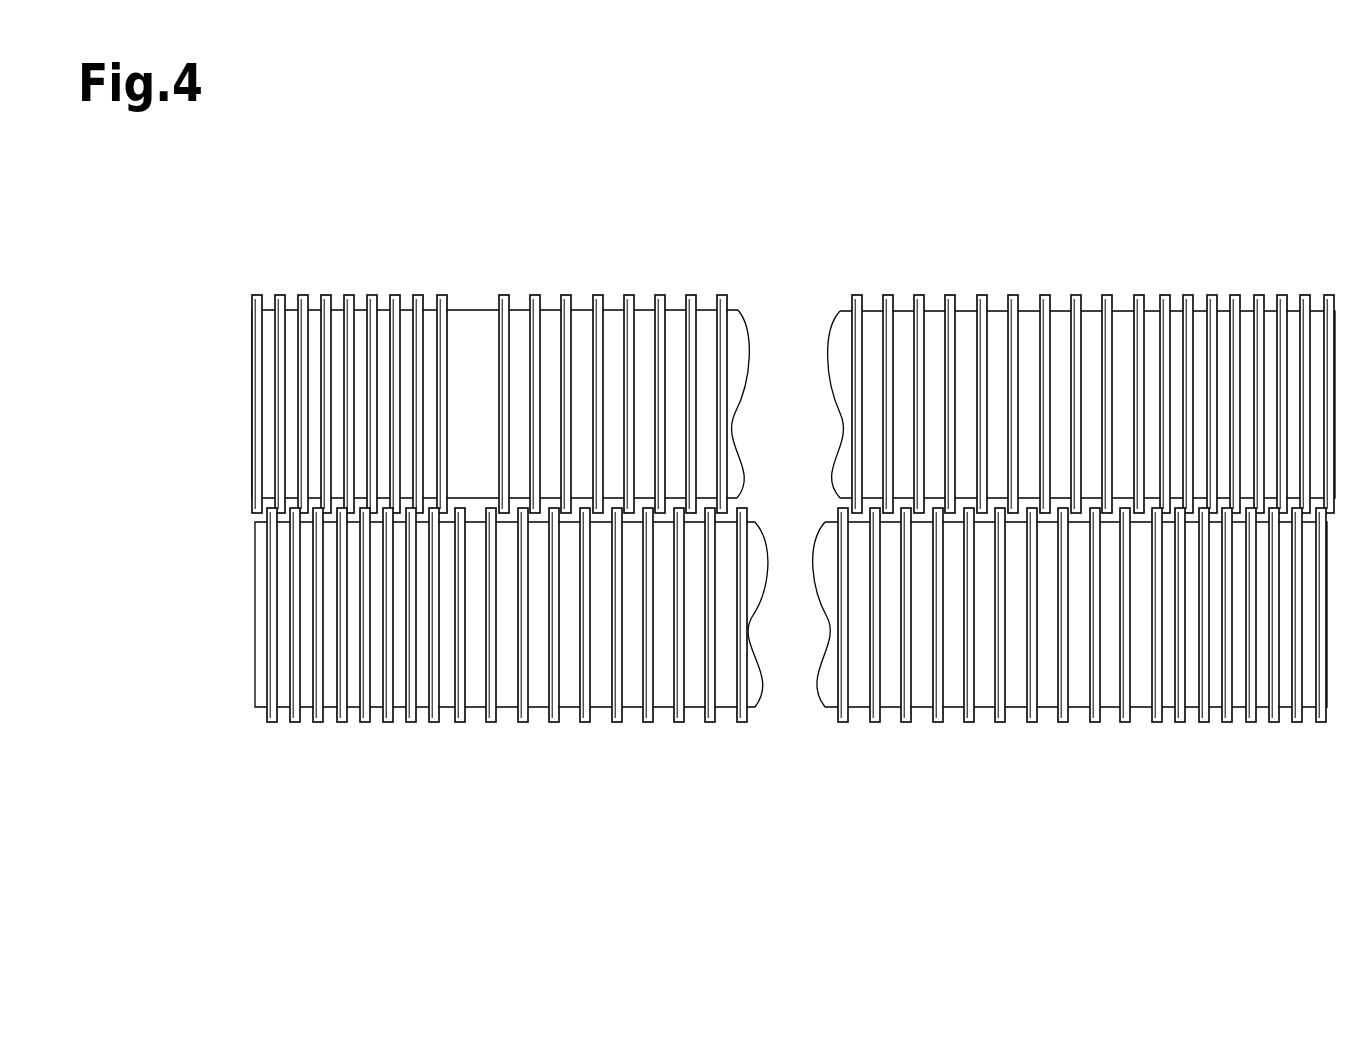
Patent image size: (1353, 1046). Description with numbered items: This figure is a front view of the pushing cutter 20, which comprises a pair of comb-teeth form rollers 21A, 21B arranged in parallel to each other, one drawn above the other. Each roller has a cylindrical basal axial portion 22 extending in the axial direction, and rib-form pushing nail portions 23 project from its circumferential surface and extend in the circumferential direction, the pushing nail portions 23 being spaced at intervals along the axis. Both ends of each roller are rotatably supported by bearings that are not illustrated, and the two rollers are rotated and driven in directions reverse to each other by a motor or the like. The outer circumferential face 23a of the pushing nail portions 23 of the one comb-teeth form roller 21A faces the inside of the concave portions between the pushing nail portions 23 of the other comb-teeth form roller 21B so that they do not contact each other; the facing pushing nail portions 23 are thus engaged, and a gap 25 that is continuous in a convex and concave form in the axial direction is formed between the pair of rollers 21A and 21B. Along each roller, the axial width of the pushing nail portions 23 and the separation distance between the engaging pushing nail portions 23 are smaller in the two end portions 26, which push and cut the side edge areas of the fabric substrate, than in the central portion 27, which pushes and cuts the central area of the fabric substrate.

The pushing cutter 20 is at (112, 450).
The comb-teeth form roller 21A is at (243, 398).
The comb-teeth form roller 21B is at (243, 622).
The basal axial portion 22 is at (670, 322).
The pushing nail portion 23 is at (503, 297).
The outer circumferential face 23a is at (917, 337).
The gap 25 is at (752, 507).
The end portion 26 is at (425, 297).
The central portion 27 is at (985, 288).